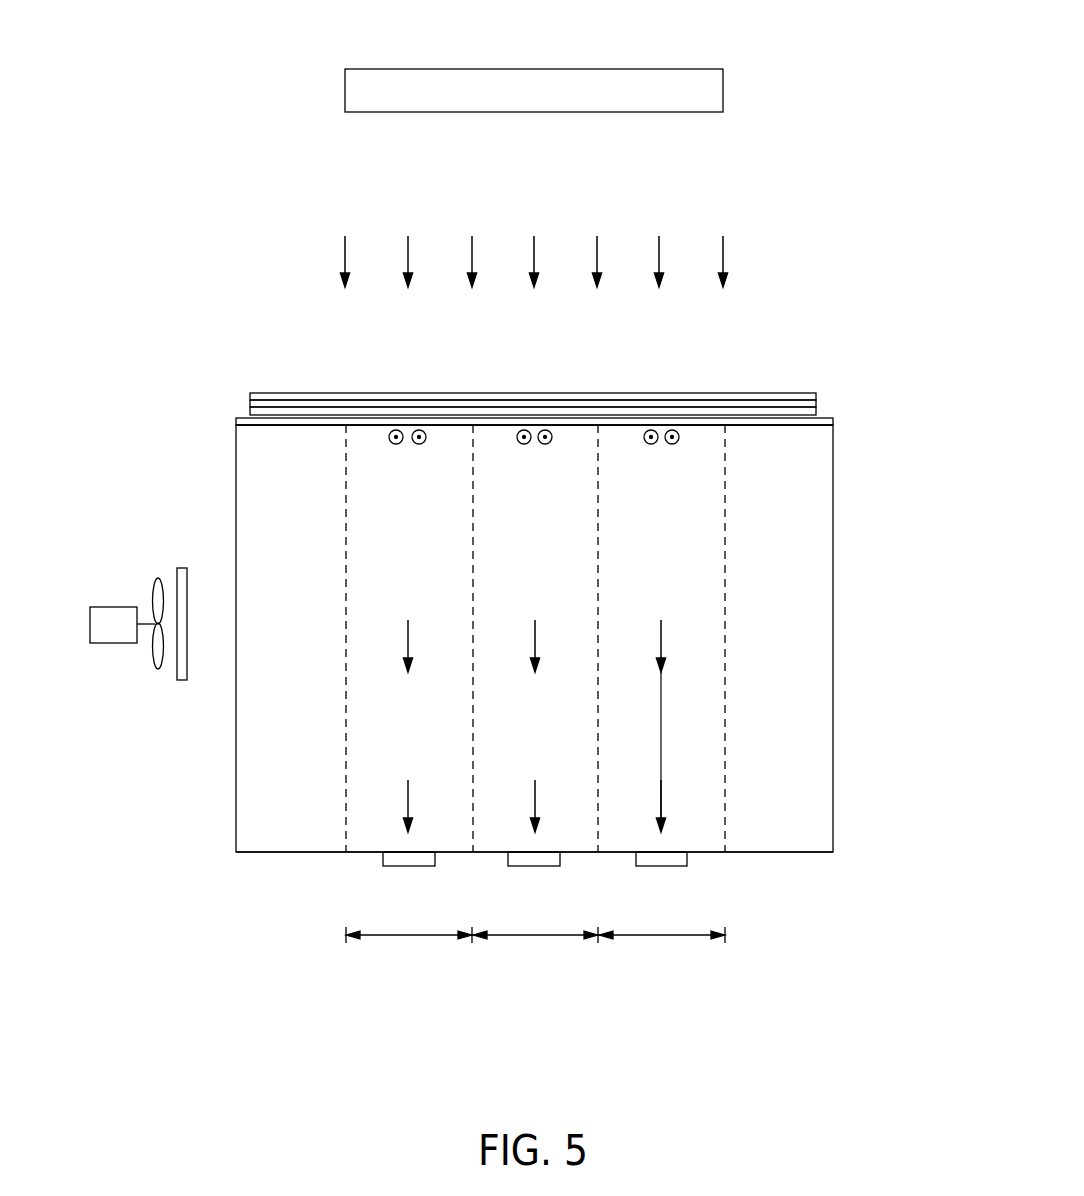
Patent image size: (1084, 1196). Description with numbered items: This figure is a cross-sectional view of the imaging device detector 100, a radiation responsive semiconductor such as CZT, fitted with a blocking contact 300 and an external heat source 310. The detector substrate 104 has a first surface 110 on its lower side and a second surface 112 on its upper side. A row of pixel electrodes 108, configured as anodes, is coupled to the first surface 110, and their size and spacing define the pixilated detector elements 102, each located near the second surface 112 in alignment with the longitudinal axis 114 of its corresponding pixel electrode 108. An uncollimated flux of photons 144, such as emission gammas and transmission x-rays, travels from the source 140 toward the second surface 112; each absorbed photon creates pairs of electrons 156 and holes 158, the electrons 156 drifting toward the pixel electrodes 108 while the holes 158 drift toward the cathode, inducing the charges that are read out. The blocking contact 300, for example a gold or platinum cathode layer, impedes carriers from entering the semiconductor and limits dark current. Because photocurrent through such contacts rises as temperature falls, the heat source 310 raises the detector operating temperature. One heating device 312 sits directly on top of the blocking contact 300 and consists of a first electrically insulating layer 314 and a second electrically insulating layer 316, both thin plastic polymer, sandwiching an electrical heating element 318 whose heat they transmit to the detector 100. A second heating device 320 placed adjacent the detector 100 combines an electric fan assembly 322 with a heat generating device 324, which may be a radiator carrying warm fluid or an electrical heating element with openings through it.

The imaging device detector 100 is at (272, 332).
The pixilated semi-conductor detector elements 102 is at (393, 937).
The detector substrate 104 is at (833, 666).
The pixel electrodes 108 is at (422, 867).
The first surface 110 is at (815, 853).
The second surface 112 is at (246, 428).
The longitudinal axis 114 is at (661, 688).
The source 140 is at (700, 69).
The photons 144 is at (408, 243).
The electrons 156 is at (360, 748).
The holes 158 is at (380, 453).
The blocking contact 300 is at (833, 421).
The external heat source 310 is at (170, 381).
The heating device 312 is at (236, 393).
The first electrically insulating layer 314 is at (816, 408).
The second electrically insulating layer 316 is at (816, 393).
The electrical heating element 318 is at (816, 400).
The heating device 320 is at (109, 566).
The electric fan assembly 322 is at (113, 645).
The heat generating device 324 is at (183, 682).